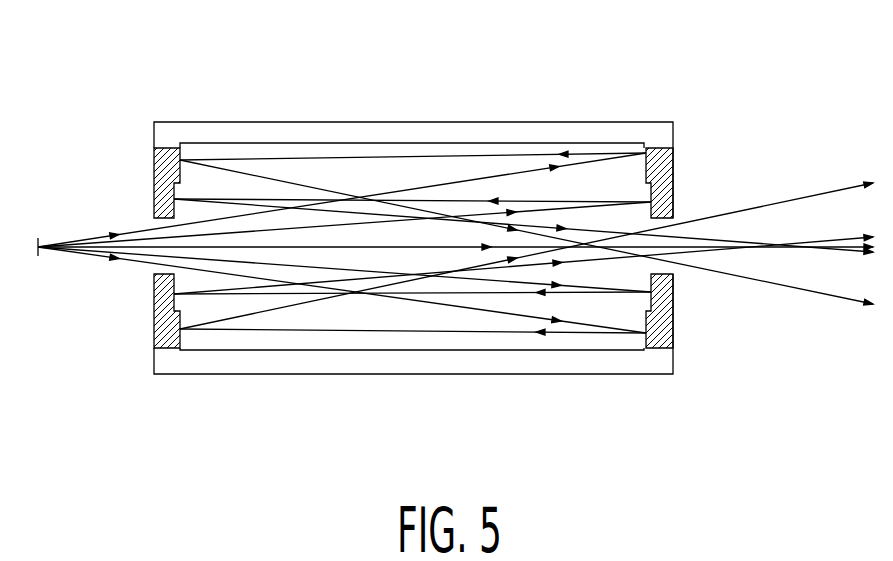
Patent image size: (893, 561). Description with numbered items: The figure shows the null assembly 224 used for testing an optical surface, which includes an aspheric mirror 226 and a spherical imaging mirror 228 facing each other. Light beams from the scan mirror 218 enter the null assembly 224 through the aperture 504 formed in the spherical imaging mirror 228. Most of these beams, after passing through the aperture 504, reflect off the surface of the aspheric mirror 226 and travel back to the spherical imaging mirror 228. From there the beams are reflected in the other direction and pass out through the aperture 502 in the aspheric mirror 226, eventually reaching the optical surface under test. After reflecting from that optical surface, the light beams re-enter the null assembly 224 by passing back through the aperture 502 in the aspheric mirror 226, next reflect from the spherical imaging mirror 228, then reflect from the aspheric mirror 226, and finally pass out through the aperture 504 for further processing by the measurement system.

The scan mirror 218 is at (35, 256).
The null assembly 224 is at (463, 122).
The aspheric mirror 226 is at (674, 170).
The spherical imaging mirror 228 is at (153, 160).
The aperture 502 is at (670, 244).
The aperture 504 is at (167, 252).